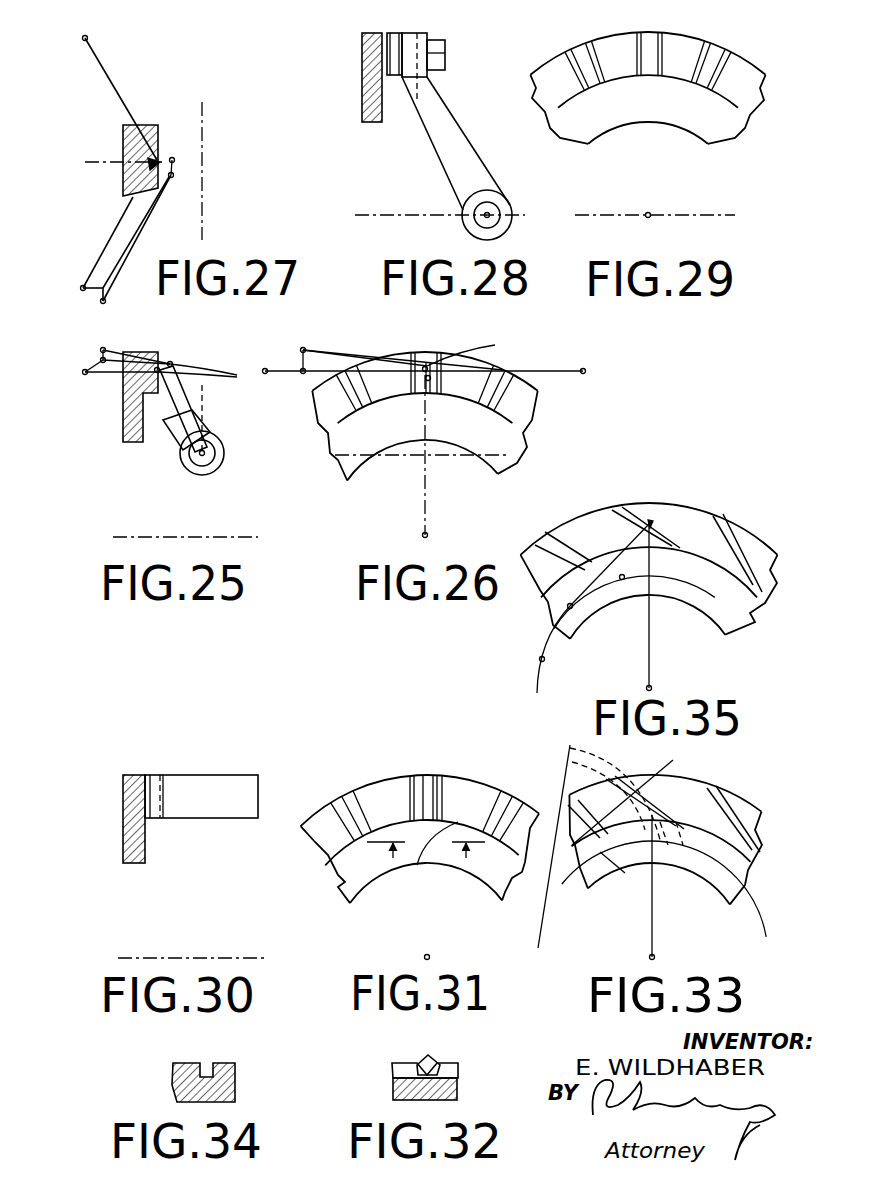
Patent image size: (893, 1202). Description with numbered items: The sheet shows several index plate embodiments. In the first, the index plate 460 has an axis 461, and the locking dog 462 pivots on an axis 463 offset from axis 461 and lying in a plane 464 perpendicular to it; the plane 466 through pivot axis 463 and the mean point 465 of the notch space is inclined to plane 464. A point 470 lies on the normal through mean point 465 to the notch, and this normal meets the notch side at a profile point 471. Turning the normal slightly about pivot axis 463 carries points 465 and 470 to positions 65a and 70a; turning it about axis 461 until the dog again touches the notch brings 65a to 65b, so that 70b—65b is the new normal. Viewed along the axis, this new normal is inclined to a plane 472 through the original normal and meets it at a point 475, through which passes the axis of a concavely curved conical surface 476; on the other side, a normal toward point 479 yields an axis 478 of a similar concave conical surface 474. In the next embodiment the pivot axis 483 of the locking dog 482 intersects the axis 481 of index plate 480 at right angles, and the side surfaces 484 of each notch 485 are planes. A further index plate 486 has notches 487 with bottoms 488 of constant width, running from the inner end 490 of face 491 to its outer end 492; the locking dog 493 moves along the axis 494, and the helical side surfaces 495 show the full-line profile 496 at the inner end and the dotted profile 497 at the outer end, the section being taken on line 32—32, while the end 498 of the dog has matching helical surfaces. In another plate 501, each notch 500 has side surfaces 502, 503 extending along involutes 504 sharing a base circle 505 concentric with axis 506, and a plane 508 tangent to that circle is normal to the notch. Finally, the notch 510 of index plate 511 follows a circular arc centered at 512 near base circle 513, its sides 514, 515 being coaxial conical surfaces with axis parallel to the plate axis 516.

In FIG. 27, the normal end point 479 is at (88, 38).
In FIG. 27, the notch profile point 471 is at (150, 172).
In FIG. 27, the point on normal 470 is at (83, 287).
In FIG. 25, the point on normal 470 is at (84, 373).
In FIG. 26, the point on normal 470 is at (302, 348).
In FIG. 27, the displaced position of point 470 70a is at (84, 290).
In FIG. 25, the displaced position of point 470 70a is at (101, 349).
In FIG. 26, the displaced position of point 470 70a is at (318, 353).
In FIG. 27, the new position of point 470 70b is at (106, 302).
In FIG. 26, the new position of point 470 70b is at (301, 372).
In FIG. 27, the mean point of notch space 465 is at (156, 162).
In FIG. 25, the mean point of notch space 465 is at (157, 371).
In FIG. 26, the mean point of notch space 465 is at (425, 373).
In FIG. 27, the displaced position of mean point 65a is at (175, 160).
In FIG. 25, the displaced position of mean point 65a is at (173, 364).
In FIG. 26, the displaced position of mean point 65a is at (432, 366).
In FIG. 27, the new position of mean point 65b is at (174, 175).
In FIG. 26, the new position of mean point 65b is at (423, 366).
In FIG. 27, the pivot axis of locking dog 463 is at (204, 200).
In FIG. 25, the pivot axis of locking dog 463 is at (222, 452).
In FIG. 26, the pivot axis of locking dog 463 is at (492, 453).
In FIG. 28, the index plate 480 is at (362, 80).
In FIG. 29, the index plate 480 is at (705, 52).
In FIG. 28, the locking dog 482 is at (458, 171).
In FIG. 28, the pivot axis of locking dog 483 is at (490, 217).
In FIG. 29, the pivot axis of locking dog 483 is at (712, 216).
In FIG. 28, the axis of index plate 481 is at (445, 214).
In FIG. 29, the axis of index plate 481 is at (650, 214).
In FIG. 29, the notch 485 is at (652, 40).
In FIG. 29, the side surfaces of notch 484 is at (660, 62).
In FIG. 25, the index plate 460 is at (128, 412).
In FIG. 26, the index plate 460 is at (507, 425).
In FIG. 25, the plane 464 is at (203, 410).
In FIG. 25, the plane 466 is at (168, 432).
In FIG. 25, the locking dog 462 is at (180, 460).
In FIG. 25, the axis of index plate 461 is at (150, 537).
In FIG. 26, the axis of index plate 461 is at (427, 533).
In FIG. 26, the concavely curved conical surface 476 is at (413, 358).
In FIG. 26, the intersection point 475 is at (450, 373).
In FIG. 26, the axis of concave conical surface 478 is at (265, 368).
In FIG. 26, the concave conical surface 474 is at (495, 345).
In FIG. 26, the plane 472 is at (505, 371).
In FIG. 35, the side of notch 514 is at (612, 518).
In FIG. 35, the notch 510 is at (636, 509).
In FIG. 35, the index plate 511 is at (666, 510).
In FIG. 35, the side of notch 515 is at (655, 520).
In FIG. 35, the arc center 512 is at (573, 608).
In FIG. 35, the base circle 513 is at (545, 659).
In FIG. 35, the axis of index plate 516 is at (652, 690).
In FIG. 30, the index plate 486 is at (133, 766).
In FIG. 31, the index plate 486 is at (459, 793).
In FIG. 30, the end of locking dog 498 is at (160, 778).
In FIG. 30, the locking dog 493 is at (187, 800).
In FIG. 30, the axis of index plate 494 is at (150, 958).
In FIG. 31, the axis of index plate 494 is at (429, 956).
In FIG. 31, the notch bottom 488 is at (425, 780).
In FIG. 31, the notch 487 is at (340, 812).
In FIG. 31, the outer end of face 492 is at (490, 791).
In FIG. 31, the face of index plate 491 is at (365, 808).
In FIG. 31, the side surfaces of notch 495 is at (433, 803).
In FIG. 31, the inner end of face 490 is at (430, 855).
In FIG. 31, the section line 32 is at (428, 859).
In FIG. 33, the notch 500 is at (730, 810).
In FIG. 34, the notch 500 is at (206, 1068).
In FIG. 33, the index plate 501 is at (697, 796).
In FIG. 34, the index plate 501 is at (222, 1086).
In FIG. 33, the side surface of notch 502 is at (640, 815).
In FIG. 34, the side surface of notch 502 is at (203, 1072).
In FIG. 33, the side surface of notch 503 is at (642, 798).
In FIG. 34, the side surface of notch 503 is at (211, 1072).
In FIG. 33, the involutes 504 is at (600, 760).
In FIG. 33, the base circle 505 is at (566, 884).
In FIG. 33, the plane 508 is at (631, 875).
In FIG. 33, the axis of index plate 506 is at (660, 951).
In FIG. 32, the notch profile at outer end 497 is at (412, 1070).
In FIG. 32, the notch profile at inner end 496 is at (428, 1060).